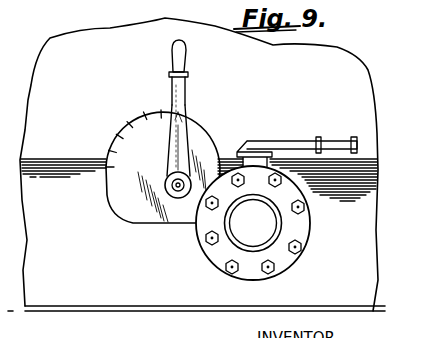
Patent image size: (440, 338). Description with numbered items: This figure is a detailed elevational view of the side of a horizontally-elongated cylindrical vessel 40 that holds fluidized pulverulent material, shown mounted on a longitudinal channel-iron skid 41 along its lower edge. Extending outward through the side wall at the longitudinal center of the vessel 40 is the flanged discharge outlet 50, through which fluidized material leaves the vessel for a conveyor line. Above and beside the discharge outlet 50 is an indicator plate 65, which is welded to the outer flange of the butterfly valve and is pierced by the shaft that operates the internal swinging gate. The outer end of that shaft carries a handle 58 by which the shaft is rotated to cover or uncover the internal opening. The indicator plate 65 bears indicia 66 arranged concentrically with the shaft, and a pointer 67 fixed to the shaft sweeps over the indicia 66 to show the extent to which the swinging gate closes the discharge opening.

The vessel 40 is at (42, 65).
The skid 41 is at (85, 295).
The discharge outlet 50 is at (275, 232).
The handle 58 is at (184, 92).
The indicator plate 65 is at (208, 129).
The indicia 66 is at (123, 140).
The pointer 67 is at (168, 168).